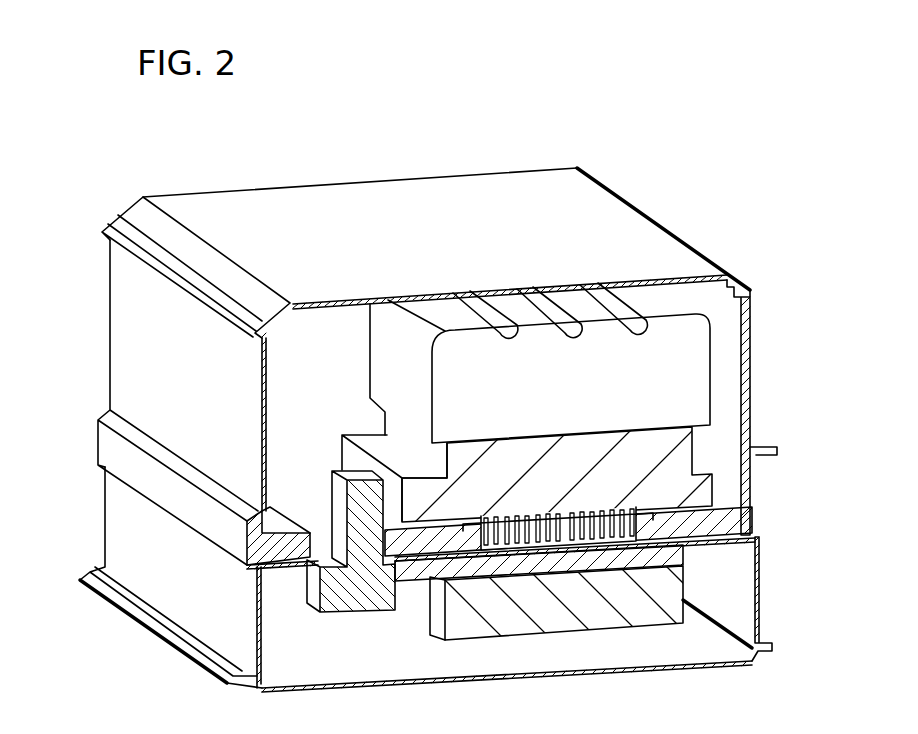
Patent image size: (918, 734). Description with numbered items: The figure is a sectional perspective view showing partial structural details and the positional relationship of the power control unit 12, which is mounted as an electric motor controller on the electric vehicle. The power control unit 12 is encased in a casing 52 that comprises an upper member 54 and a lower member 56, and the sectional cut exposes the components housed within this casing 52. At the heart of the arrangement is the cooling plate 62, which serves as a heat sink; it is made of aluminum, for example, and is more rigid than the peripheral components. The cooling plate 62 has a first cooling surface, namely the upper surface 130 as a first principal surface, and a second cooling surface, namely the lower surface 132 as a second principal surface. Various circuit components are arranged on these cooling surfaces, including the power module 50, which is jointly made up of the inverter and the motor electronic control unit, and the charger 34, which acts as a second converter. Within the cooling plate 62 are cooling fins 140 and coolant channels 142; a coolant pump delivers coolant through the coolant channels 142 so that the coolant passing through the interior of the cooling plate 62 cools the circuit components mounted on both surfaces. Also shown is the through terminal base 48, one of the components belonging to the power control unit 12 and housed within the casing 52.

The power control unit 12 is at (348, 152).
The charger 34 is at (512, 640).
The through terminal base 48 is at (363, 612).
The power module 50 is at (698, 450).
The casing 52 is at (104, 333).
The upper member 54 is at (110, 290).
The lower member 56 is at (104, 514).
The cooling plate 62 is at (699, 525).
The upper surface 130 is at (290, 468).
The lower surface 132 is at (737, 543).
The cooling fins 140 is at (636, 527).
The coolant channels 142 is at (580, 527).